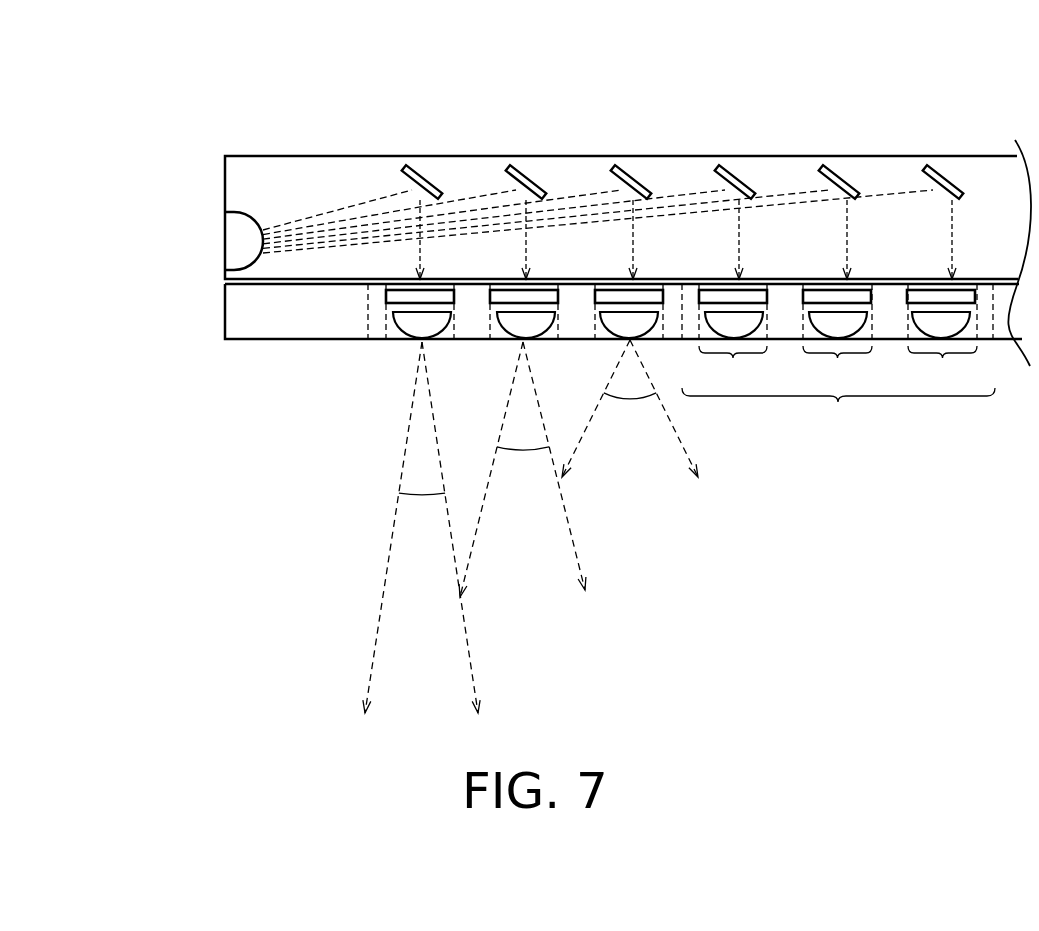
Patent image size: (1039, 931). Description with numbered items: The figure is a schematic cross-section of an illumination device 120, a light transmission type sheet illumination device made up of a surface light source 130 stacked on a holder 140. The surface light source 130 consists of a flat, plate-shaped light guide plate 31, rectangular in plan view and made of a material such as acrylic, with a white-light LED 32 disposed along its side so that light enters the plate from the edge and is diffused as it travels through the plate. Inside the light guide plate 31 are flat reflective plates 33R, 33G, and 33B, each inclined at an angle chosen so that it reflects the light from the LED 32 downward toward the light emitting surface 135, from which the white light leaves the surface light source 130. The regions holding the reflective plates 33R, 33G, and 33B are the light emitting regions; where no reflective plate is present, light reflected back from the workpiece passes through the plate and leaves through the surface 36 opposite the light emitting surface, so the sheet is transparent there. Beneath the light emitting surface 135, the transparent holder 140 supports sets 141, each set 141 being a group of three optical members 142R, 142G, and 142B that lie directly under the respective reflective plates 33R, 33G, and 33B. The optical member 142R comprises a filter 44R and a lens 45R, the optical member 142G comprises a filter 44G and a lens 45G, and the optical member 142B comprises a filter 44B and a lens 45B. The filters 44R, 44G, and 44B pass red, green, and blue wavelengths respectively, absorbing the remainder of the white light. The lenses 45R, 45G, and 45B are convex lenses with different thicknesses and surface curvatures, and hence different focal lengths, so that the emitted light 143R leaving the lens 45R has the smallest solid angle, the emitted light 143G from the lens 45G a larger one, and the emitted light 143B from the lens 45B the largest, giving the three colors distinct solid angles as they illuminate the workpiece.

The illumination device 120 is at (145, 86).
The surface light source 130 is at (201, 181).
The light guide plate 31 is at (277, 168).
The LED 32 is at (237, 240).
The light emitting surface 135 is at (256, 288).
The holder 140 is at (237, 315).
The surface opposite to the light emitting surface 36 is at (1012, 138).
The reflective plate 33R is at (425, 172).
The reflective plate 33G is at (529, 172).
The reflective plate 33B is at (634, 172).
The filter 44R is at (400, 295).
The filter 44G is at (504, 295).
The filter 44B is at (609, 295).
The lens 45R is at (435, 321).
The lens 45G is at (539, 321).
The lens 45B is at (642, 321).
The optical member 142R is at (733, 336).
The optical member 142G is at (837, 336).
The optical member 142B is at (942, 336).
The set 141 is at (838, 356).
The emitted light 143R is at (375, 646).
The emitted light 143G is at (582, 555).
The emitted light 143B is at (688, 447).